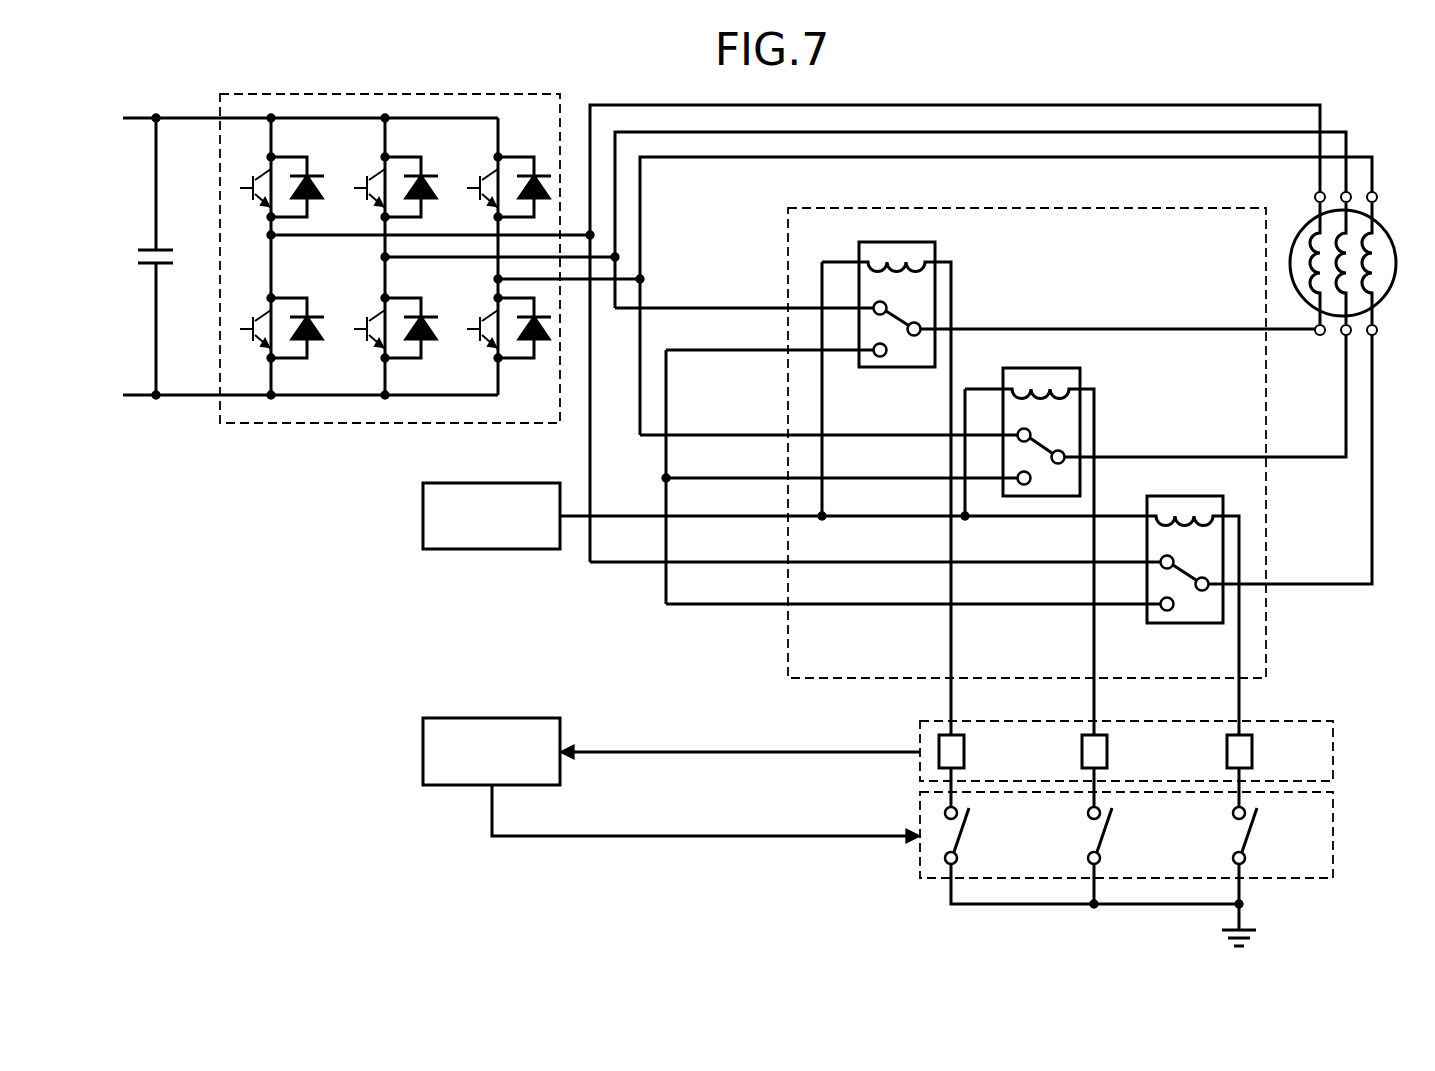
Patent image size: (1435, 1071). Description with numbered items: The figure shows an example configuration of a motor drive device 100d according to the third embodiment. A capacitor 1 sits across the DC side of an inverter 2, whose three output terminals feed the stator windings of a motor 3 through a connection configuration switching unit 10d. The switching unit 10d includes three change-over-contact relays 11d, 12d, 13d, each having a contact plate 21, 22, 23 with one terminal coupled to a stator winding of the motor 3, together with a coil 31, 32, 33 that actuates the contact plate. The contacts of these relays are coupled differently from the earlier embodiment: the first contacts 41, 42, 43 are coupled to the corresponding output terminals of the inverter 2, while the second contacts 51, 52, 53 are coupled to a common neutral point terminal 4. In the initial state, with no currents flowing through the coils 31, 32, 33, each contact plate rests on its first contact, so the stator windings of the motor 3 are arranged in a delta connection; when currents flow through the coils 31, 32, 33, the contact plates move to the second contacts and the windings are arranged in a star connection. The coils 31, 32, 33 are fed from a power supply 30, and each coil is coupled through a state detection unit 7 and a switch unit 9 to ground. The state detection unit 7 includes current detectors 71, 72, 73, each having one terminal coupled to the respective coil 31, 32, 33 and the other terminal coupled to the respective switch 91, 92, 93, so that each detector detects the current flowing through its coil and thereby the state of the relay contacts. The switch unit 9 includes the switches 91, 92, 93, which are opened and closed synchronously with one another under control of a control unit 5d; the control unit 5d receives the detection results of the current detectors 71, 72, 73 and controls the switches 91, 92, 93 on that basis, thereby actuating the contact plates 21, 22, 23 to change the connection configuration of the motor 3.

The motor drive device 100d is at (1256, 70).
The capacitor 1 is at (166, 255).
The inverter 2 is at (470, 94).
The motor 3 is at (1380, 225).
The neutral point terminal 4 is at (665, 478).
The control unit 5d is at (521, 700).
The state detection unit 7 is at (1333, 752).
The switch unit 9 is at (1333, 836).
The connection configuration switching unit 10d is at (1152, 208).
The relay 11d is at (894, 226).
The relay 12d is at (1038, 352).
The relay 13d is at (1182, 480).
The contact plate 21 is at (900, 341).
The contact plate 22 is at (1044, 475).
The contact plate 23 is at (1190, 592).
The power supply 30 is at (517, 483).
The coil 31 is at (902, 264).
The coil 32 is at (1052, 394).
The coil 33 is at (1198, 521).
The contact 41 is at (872, 304).
The contact 42 is at (1018, 432).
The contact 43 is at (1161, 559).
The contact 51 is at (872, 346).
The contact 52 is at (1018, 474).
The contact 53 is at (1161, 601).
The current detector 71 is at (963, 750).
The current detector 72 is at (1106, 750).
The current detector 73 is at (1251, 750).
The switch 91 is at (962, 833).
The switch 92 is at (1105, 833).
The switch 93 is at (1250, 833).